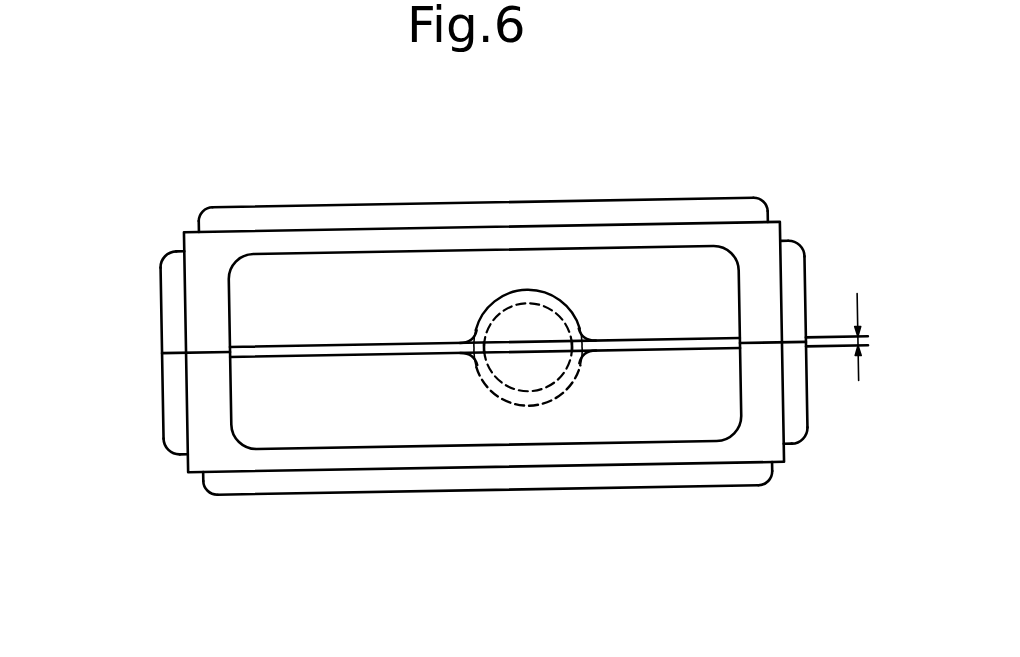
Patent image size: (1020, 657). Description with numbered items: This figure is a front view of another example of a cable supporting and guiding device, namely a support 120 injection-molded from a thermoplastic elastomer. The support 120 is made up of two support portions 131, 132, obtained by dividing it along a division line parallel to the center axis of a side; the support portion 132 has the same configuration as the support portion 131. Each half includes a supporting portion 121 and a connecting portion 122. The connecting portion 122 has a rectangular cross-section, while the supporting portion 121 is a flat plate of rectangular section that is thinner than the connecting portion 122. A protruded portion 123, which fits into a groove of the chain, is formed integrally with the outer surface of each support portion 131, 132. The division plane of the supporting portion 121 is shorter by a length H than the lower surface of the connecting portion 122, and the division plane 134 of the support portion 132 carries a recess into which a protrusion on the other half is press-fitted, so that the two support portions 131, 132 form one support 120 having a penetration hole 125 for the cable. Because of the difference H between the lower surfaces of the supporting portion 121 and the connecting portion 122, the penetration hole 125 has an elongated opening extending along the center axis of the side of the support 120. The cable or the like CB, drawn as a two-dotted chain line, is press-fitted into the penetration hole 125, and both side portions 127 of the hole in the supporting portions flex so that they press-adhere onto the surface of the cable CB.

The support 120 is at (147, 293).
The supporting portion 121 is at (470, 262).
The connecting portion 122 is at (298, 243).
The protruded portion 123 is at (204, 215).
The penetration hole 125 is at (528, 352).
The side portions of the penetration hole 127 is at (478, 303).
The support portion 131 is at (598, 177).
The support portion 132 is at (337, 544).
The division plane 134 is at (173, 350).
The cable or the like CB is at (510, 365).
The length difference H is at (871, 336).